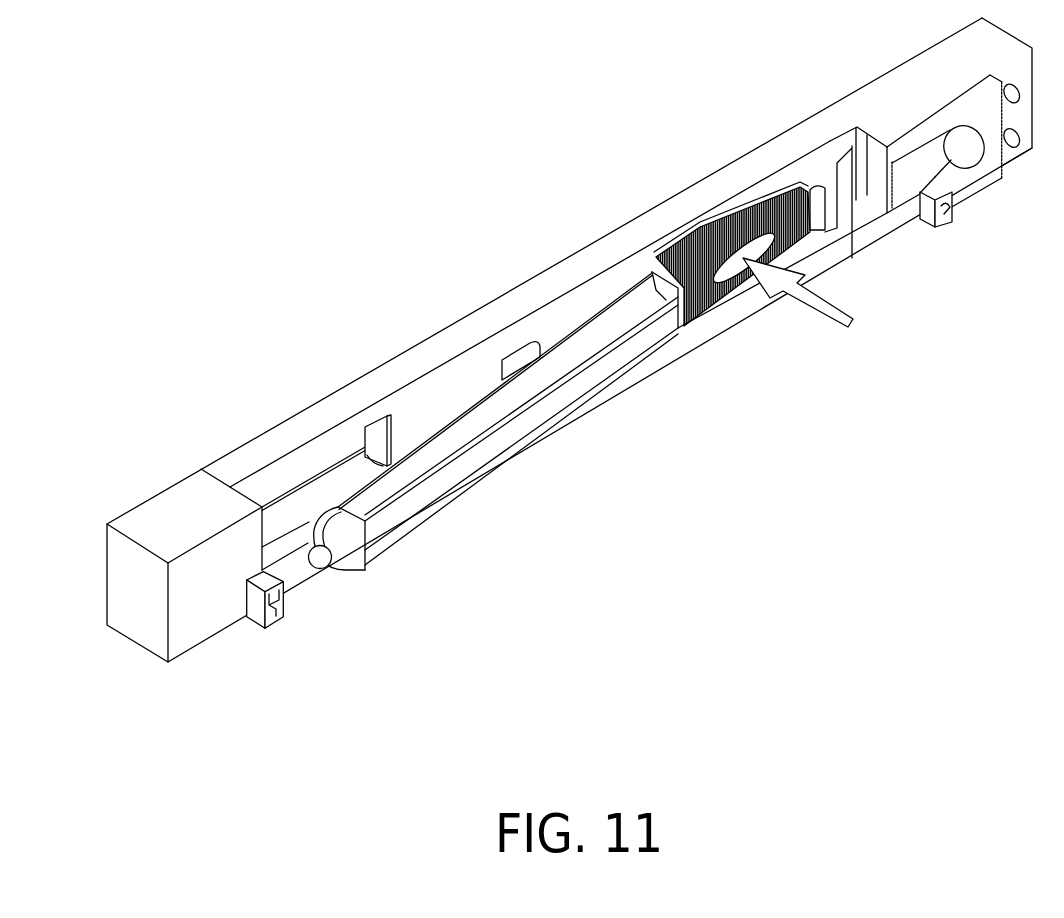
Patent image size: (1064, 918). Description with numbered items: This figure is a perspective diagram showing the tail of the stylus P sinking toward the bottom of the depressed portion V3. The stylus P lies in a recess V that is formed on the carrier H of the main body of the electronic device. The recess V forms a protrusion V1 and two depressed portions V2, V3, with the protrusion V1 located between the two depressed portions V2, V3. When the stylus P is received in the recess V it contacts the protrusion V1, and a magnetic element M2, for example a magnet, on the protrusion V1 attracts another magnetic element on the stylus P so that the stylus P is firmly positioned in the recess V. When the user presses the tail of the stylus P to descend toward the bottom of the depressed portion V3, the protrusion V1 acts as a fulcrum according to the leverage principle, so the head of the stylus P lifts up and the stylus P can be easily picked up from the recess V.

The carrier H is at (908, 78).
The recess V is at (745, 77).
The protrusion V1 is at (555, 325).
The depressed portion V2 is at (305, 477).
The depressed portion V3 is at (666, 258).
The stylus P is at (420, 516).
The magnetic element M2 is at (518, 357).